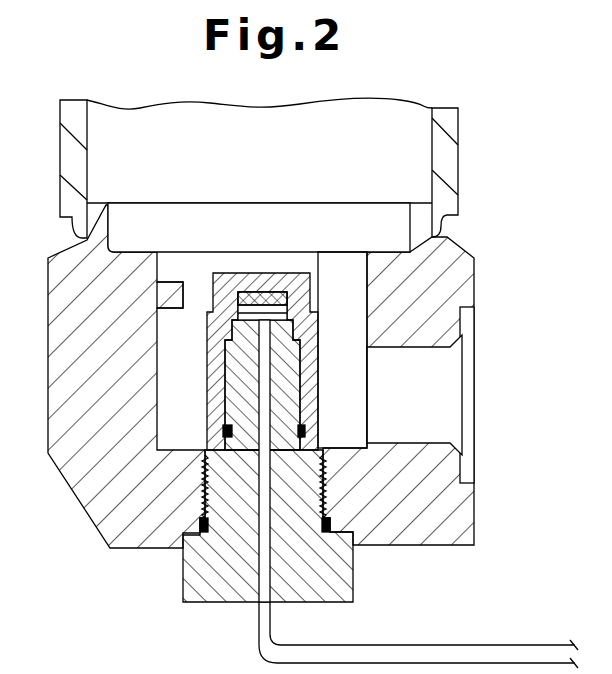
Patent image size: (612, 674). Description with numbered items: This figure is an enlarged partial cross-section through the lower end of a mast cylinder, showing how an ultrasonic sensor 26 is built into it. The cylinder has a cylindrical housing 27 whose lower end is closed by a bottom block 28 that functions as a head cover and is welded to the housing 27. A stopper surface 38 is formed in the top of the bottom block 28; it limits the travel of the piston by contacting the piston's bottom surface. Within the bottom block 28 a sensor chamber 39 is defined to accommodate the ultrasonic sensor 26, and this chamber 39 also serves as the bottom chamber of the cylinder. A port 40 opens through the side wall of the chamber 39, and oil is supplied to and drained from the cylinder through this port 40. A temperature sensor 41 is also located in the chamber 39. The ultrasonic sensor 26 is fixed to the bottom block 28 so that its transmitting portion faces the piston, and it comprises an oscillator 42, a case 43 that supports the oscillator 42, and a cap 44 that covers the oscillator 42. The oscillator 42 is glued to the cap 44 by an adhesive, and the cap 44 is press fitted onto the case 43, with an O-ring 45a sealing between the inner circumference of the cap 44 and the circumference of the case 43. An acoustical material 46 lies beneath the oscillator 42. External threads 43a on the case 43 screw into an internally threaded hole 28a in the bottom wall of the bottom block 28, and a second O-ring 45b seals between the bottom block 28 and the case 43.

The ultrasonic sensor 26 is at (200, 290).
The cylindrical housing 27 is at (450, 128).
The bottom block 28 is at (473, 263).
The internally threaded hole 28a is at (207, 512).
The stopper surface 38 is at (133, 252).
The sensor chamber 39 is at (352, 263).
The port 40 is at (442, 356).
The temperature sensor 41 is at (168, 282).
The oscillator 42 is at (296, 285).
The case 43 is at (185, 583).
The external threads 43a is at (195, 485).
The cap 44 is at (227, 272).
The O-ring 45a is at (223, 432).
The O-ring 45b is at (332, 524).
The acoustical material 46 is at (292, 305).